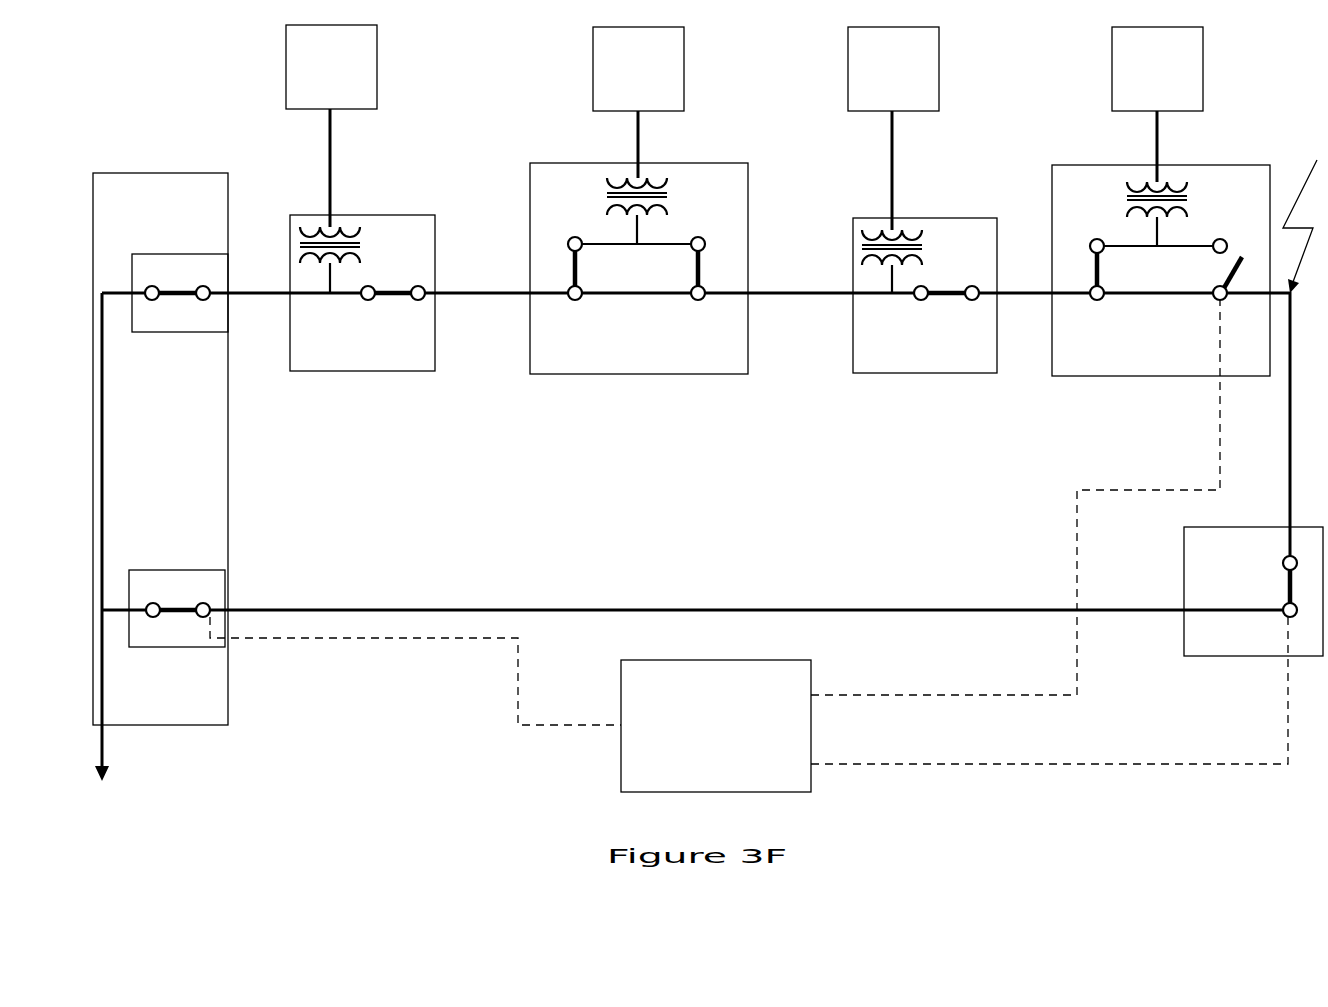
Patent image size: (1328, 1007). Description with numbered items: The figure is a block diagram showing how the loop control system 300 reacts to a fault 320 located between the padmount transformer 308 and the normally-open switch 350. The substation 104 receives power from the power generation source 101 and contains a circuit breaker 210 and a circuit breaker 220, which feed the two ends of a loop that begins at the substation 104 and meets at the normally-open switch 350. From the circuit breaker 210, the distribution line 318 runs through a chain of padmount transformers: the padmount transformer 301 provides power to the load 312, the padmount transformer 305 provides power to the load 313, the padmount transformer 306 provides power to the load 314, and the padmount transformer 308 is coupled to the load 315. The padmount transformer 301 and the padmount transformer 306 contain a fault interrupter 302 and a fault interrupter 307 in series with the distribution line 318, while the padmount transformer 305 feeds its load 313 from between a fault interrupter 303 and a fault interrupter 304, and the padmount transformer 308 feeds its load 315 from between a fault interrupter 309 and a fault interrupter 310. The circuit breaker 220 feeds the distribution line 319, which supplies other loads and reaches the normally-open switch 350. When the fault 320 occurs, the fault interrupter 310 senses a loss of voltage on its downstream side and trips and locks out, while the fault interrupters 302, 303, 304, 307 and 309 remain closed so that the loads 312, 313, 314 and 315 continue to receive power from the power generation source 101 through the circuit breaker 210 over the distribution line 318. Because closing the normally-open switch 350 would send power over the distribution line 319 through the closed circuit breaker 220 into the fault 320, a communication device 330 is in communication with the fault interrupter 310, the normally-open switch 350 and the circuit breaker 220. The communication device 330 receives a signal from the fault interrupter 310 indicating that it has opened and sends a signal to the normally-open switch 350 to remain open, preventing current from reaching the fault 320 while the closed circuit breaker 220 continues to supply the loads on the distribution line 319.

The system 300 is at (184, 62).
The substation 104 is at (160, 424).
The power generation source 101 is at (221, 577).
The circuit breaker 210 is at (180, 333).
The circuit breaker 220 is at (177, 647).
The load 312 is at (331, 126).
The load 313 is at (638, 102).
The load 314 is at (893, 128).
The load 315 is at (1157, 104).
The padmount transformer 301 is at (364, 336).
The fault interrupter 302 is at (395, 330).
The fault interrupter 303 is at (575, 306).
The fault interrupter 304 is at (698, 306).
The padmount transformer 305 is at (639, 310).
The padmount transformer 306 is at (925, 338).
The fault interrupter 307 is at (950, 330).
The padmount transformer 308 is at (1164, 312).
The fault interrupter 309 is at (1098, 308).
The fault interrupter 310 is at (1232, 234).
The distribution line 318 is at (696, 428).
The distribution line 319 is at (262, 602).
The fault 320 is at (1298, 201).
The communication device 330 is at (749, 546).
The normally-open switch 350 is at (1234, 632).